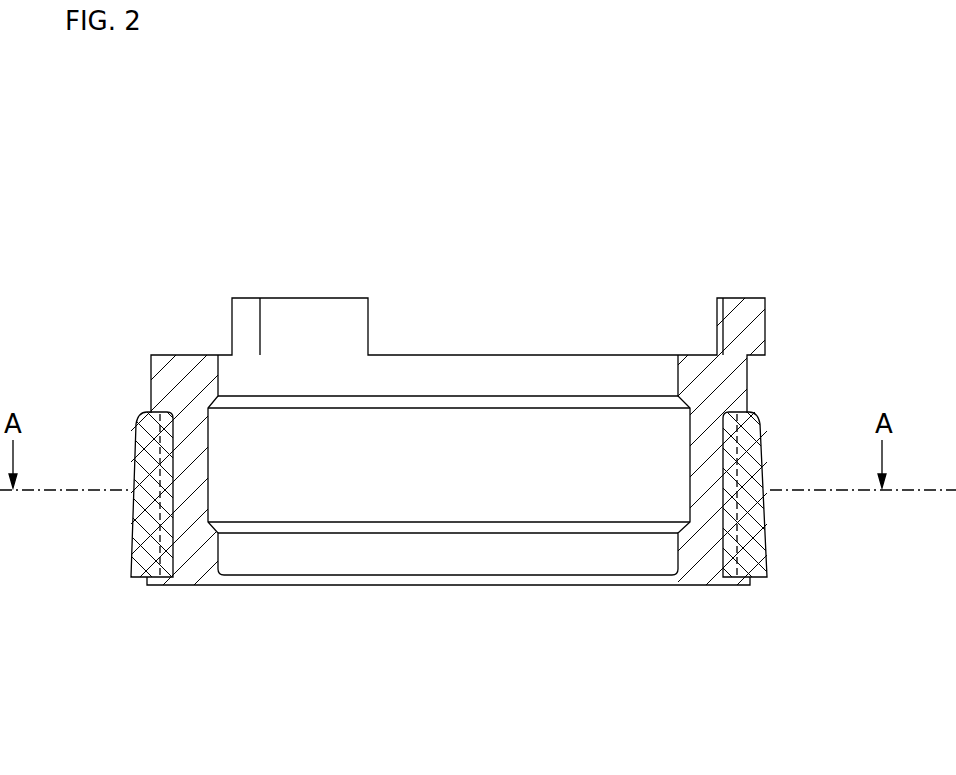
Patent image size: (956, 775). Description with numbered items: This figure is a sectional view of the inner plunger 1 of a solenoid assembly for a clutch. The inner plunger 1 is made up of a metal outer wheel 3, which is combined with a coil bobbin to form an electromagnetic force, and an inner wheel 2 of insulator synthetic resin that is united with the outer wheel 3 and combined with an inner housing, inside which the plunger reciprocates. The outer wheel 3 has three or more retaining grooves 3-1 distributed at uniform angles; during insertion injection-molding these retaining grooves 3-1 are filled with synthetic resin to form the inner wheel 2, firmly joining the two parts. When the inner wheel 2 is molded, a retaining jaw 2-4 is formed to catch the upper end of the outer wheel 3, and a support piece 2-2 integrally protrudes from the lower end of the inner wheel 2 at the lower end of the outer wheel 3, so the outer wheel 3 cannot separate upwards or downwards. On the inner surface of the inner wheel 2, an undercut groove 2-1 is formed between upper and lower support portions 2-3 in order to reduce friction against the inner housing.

The inner plunger 1 is at (418, 222).
The inner wheel 2 is at (172, 370).
The undercut groove 2-1 is at (682, 457).
The support piece 2-2 is at (150, 583).
The support portions 2-3 is at (220, 375).
The retaining jaw 2-4 is at (140, 432).
The outer wheel 3 is at (135, 580).
The retaining grooves 3-1 is at (740, 530).